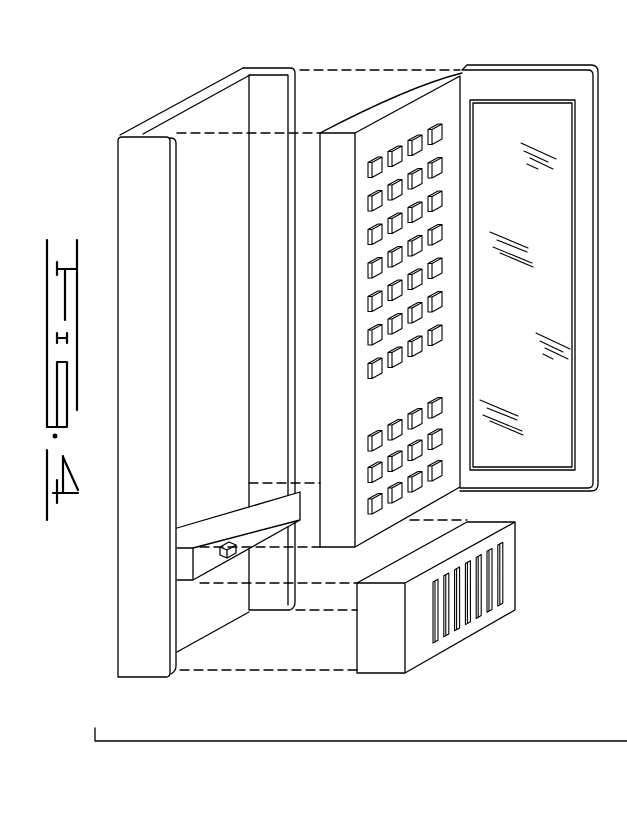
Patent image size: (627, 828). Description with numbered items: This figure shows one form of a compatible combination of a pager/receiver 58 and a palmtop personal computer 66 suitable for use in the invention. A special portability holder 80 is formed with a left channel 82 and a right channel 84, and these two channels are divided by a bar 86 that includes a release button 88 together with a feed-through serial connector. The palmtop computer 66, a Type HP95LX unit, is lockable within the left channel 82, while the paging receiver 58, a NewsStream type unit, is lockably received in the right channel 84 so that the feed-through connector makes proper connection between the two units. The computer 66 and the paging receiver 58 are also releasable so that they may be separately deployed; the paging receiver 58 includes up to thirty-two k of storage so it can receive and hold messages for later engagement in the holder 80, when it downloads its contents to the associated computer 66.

The pager/receiver 58 is at (418, 650).
The palmtop personal computer 66 is at (422, 117).
The portability holder 80 is at (136, 238).
The left channel 82 is at (200, 302).
The right channel 84 is at (196, 617).
The bar 86 is at (200, 562).
The release button 88 is at (227, 545).